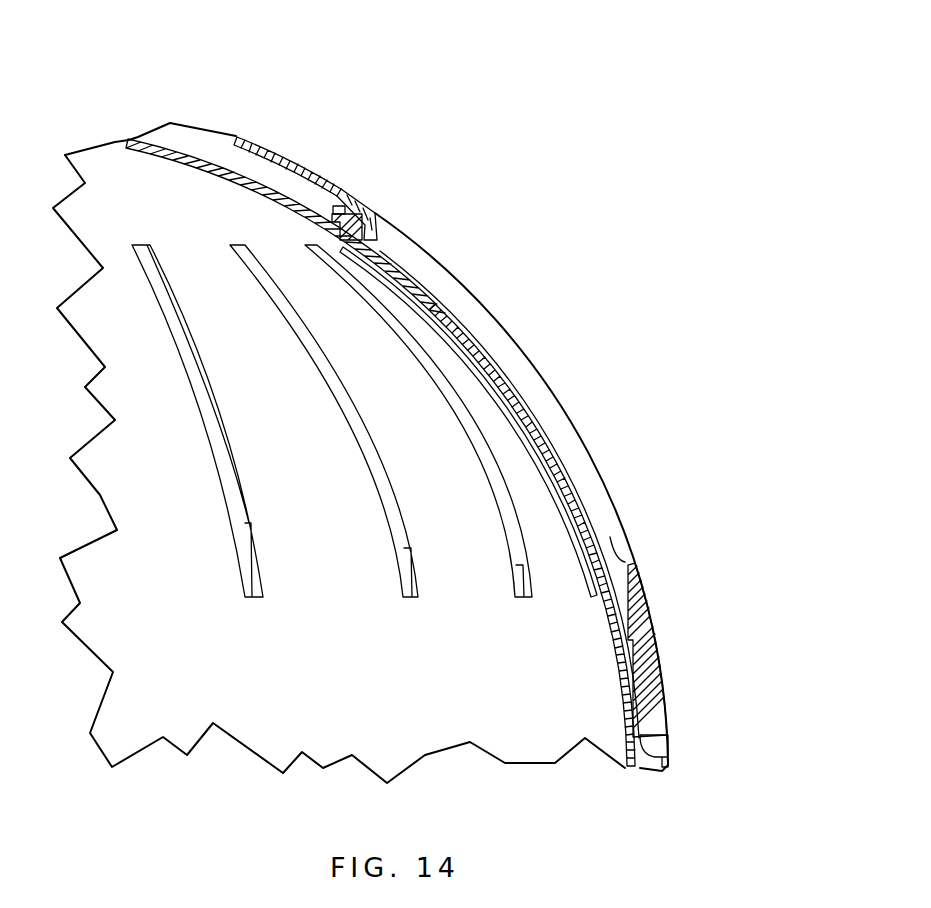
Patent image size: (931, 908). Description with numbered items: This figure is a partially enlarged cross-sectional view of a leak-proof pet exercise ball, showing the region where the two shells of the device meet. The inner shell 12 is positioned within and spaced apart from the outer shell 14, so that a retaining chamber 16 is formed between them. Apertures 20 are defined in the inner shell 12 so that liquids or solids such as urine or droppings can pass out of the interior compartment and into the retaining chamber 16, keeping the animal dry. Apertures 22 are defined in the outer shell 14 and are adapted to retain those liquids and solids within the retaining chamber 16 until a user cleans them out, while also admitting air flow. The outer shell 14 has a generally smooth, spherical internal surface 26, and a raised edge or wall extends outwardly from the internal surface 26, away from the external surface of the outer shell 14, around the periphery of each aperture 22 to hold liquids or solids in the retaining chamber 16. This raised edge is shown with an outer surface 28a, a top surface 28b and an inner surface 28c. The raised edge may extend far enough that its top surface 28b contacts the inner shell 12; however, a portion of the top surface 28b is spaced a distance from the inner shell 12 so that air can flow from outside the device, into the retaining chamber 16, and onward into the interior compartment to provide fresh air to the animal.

The inner shell 12 is at (205, 144).
The outer shell 14 is at (292, 140).
The retaining chamber 16 is at (302, 192).
The apertures 20 is at (368, 477).
The apertures 22 is at (540, 400).
The internal surface 26 is at (350, 195).
The outer surface 28a is at (340, 188).
The top surface 28b is at (393, 261).
The inner surface 28c is at (373, 232).